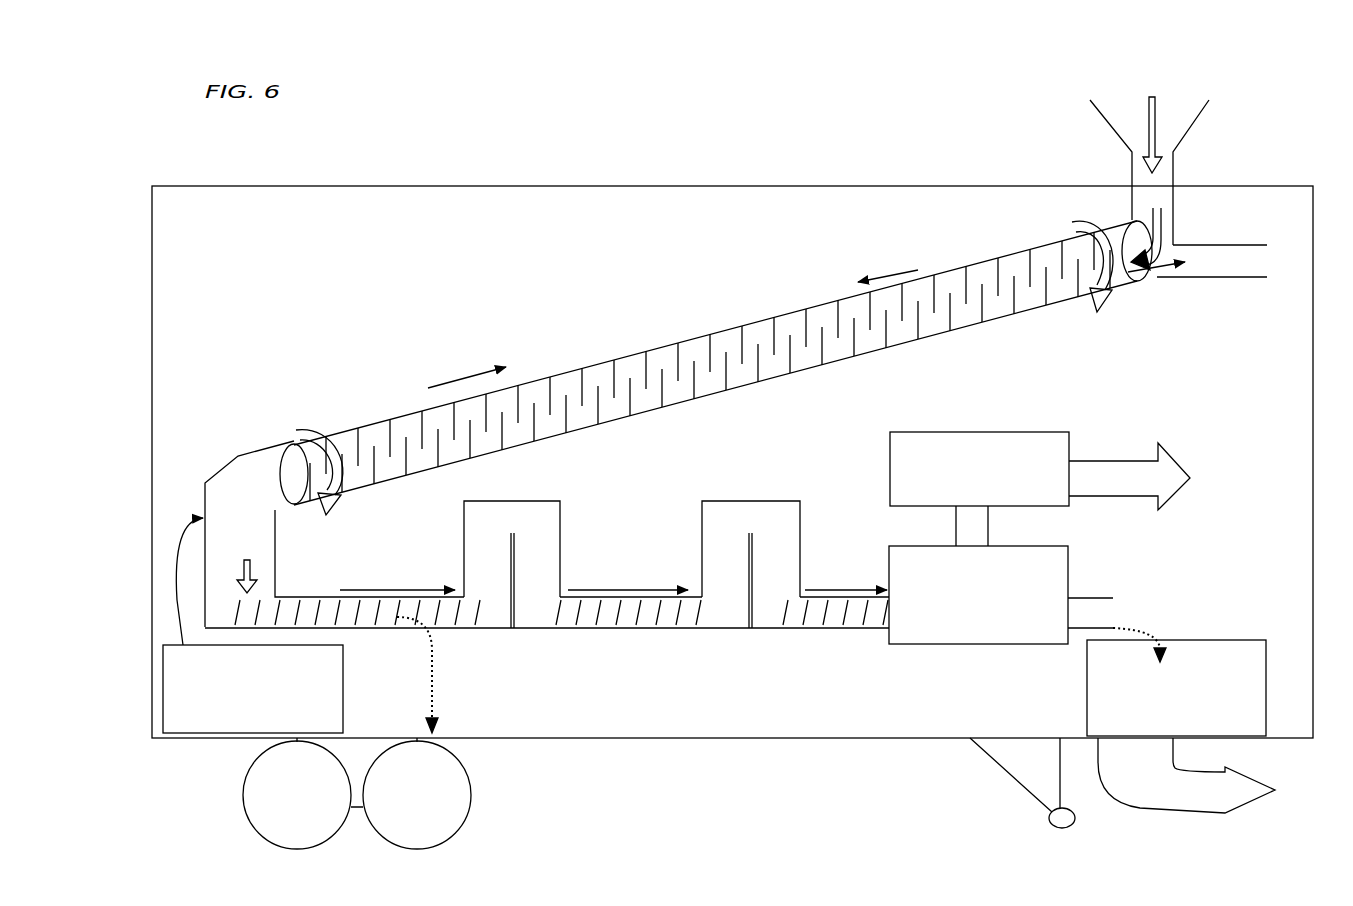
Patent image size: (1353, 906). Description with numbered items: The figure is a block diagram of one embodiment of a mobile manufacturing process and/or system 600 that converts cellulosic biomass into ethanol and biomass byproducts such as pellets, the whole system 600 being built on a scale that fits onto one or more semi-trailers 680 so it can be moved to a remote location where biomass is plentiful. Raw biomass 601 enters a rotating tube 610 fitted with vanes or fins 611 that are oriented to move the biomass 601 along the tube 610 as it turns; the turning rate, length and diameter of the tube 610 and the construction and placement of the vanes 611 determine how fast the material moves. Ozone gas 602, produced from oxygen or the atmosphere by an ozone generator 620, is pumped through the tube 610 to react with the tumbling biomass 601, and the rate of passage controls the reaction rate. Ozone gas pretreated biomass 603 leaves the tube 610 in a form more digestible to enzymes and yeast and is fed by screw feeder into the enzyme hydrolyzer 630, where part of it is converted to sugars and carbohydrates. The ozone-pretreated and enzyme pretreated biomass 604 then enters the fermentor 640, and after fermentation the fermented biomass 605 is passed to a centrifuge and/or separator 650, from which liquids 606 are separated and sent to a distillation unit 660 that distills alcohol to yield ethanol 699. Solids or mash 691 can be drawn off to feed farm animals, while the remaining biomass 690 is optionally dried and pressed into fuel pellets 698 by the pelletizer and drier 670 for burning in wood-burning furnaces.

The manufacturing process and/or system 600 is at (1258, 240).
The biomass 601 is at (1147, 52).
The ozone gas 602 is at (202, 518).
The ozone gas pretreated biomass 603 is at (268, 571).
The ozone-pretreated and enzyme pretreated biomass 604 is at (647, 618).
The fermented biomass 605 is at (850, 618).
The liquids 606 is at (987, 530).
The rotating tube 610 is at (1042, 240).
The vanes or fins 611 is at (985, 315).
The ozone generator 620 is at (343, 715).
The enzyme hydrolyzer 630 is at (545, 500).
The fermentor 640 is at (753, 500).
The centrifuge and/or separator 650 is at (945, 646).
The distillation unit 660 is at (945, 430).
The pelletizer and drier 670 is at (1087, 673).
The semi-trailers 680 is at (590, 186).
The biomass remaining after pretreatment 690 is at (1110, 598).
The solids or mash 691 is at (440, 716).
The fuel pellets 698 is at (1260, 785).
The ethanol 699 is at (1138, 461).